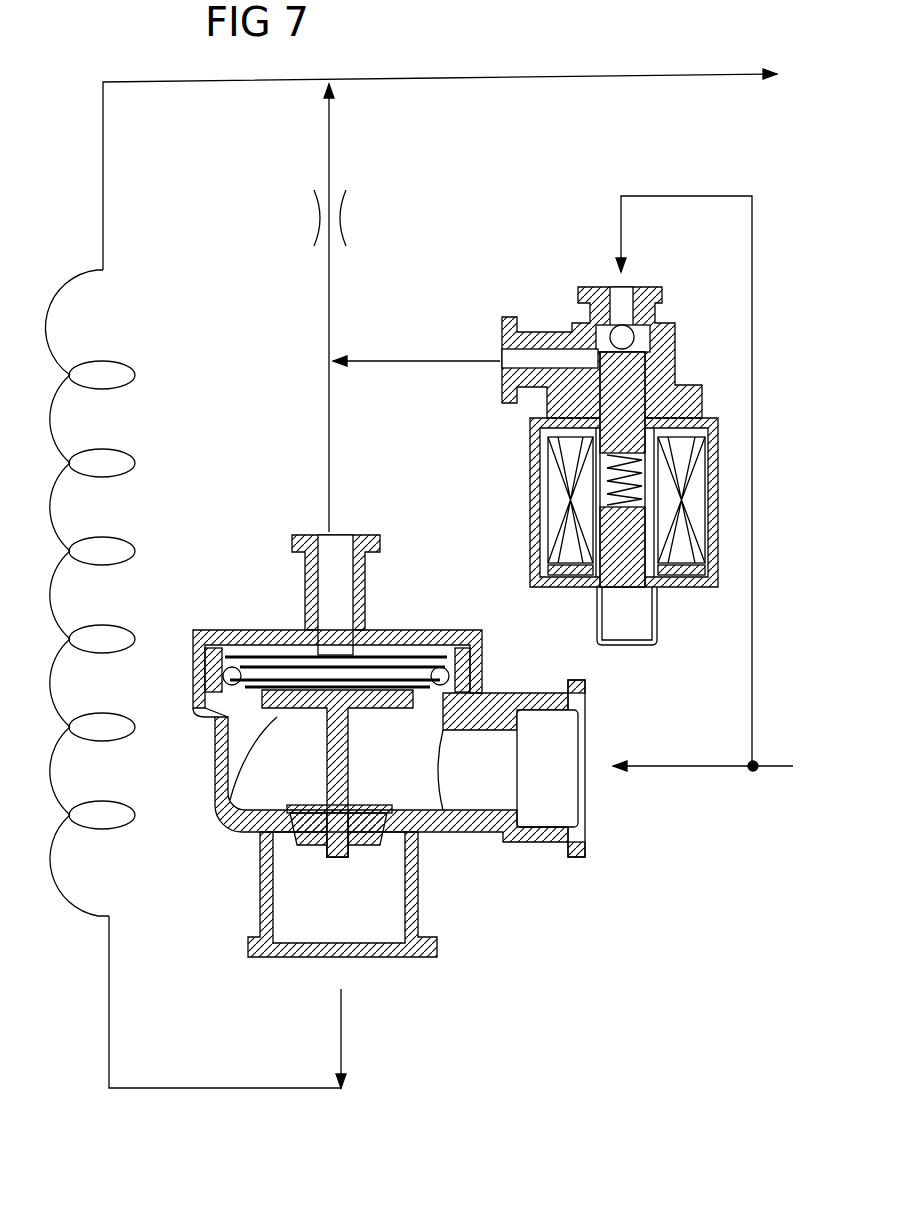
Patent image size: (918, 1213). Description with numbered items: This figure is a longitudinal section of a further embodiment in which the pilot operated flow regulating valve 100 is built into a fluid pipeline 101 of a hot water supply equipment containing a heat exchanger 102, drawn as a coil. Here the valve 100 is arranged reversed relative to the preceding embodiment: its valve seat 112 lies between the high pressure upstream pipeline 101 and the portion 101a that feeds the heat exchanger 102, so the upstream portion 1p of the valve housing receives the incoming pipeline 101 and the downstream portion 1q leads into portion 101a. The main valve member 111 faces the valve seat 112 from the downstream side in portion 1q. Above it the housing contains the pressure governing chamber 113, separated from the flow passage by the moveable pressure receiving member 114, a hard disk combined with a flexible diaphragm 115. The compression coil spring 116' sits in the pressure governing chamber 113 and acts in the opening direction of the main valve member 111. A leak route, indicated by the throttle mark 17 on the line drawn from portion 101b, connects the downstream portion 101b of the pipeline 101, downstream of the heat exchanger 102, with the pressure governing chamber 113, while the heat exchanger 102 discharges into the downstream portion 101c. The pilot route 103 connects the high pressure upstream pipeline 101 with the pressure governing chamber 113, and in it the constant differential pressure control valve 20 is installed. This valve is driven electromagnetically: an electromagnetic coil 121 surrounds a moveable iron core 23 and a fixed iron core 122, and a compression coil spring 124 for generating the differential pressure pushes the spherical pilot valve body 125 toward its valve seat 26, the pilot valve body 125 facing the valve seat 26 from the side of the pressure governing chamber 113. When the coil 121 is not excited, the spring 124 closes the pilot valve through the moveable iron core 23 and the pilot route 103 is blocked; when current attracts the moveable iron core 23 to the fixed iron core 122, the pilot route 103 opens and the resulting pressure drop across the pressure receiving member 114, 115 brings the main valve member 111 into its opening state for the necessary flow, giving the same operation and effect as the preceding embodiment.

The pilot operated flow regulating valve 100 is at (364, 764).
The fluid pipeline 101 is at (686, 770).
The pipeline portion upstream of heat exchanger 101a is at (218, 1088).
The pipeline portion downstream of heat exchanger 101b is at (232, 82).
The downstream portion of pipeline 101c is at (430, 80).
The heat exchanger 102 is at (140, 453).
The pilot route 103 is at (413, 363).
The line connection 17 is at (345, 222).
The constant differential pressure control valve 20 is at (586, 421).
The moveable iron core 23 is at (642, 378).
The valve seat 26 is at (608, 327).
The spherical pilot valve body 125 is at (628, 331).
The electromagnetic coil 121 is at (553, 470).
The compression coil spring 124 is at (603, 497).
The fixed iron core 122 is at (627, 570).
The main valve member 111 is at (383, 842).
The valve seat 112 is at (385, 815).
The pressure governing chamber 113 is at (438, 655).
The pressure receiving member 114 is at (222, 808).
The flexible diaphragm 115 is at (228, 662).
The compression coil spring 116' is at (336, 613).
The upstream portion 1p is at (547, 813).
The downstream portion 1q is at (368, 920).